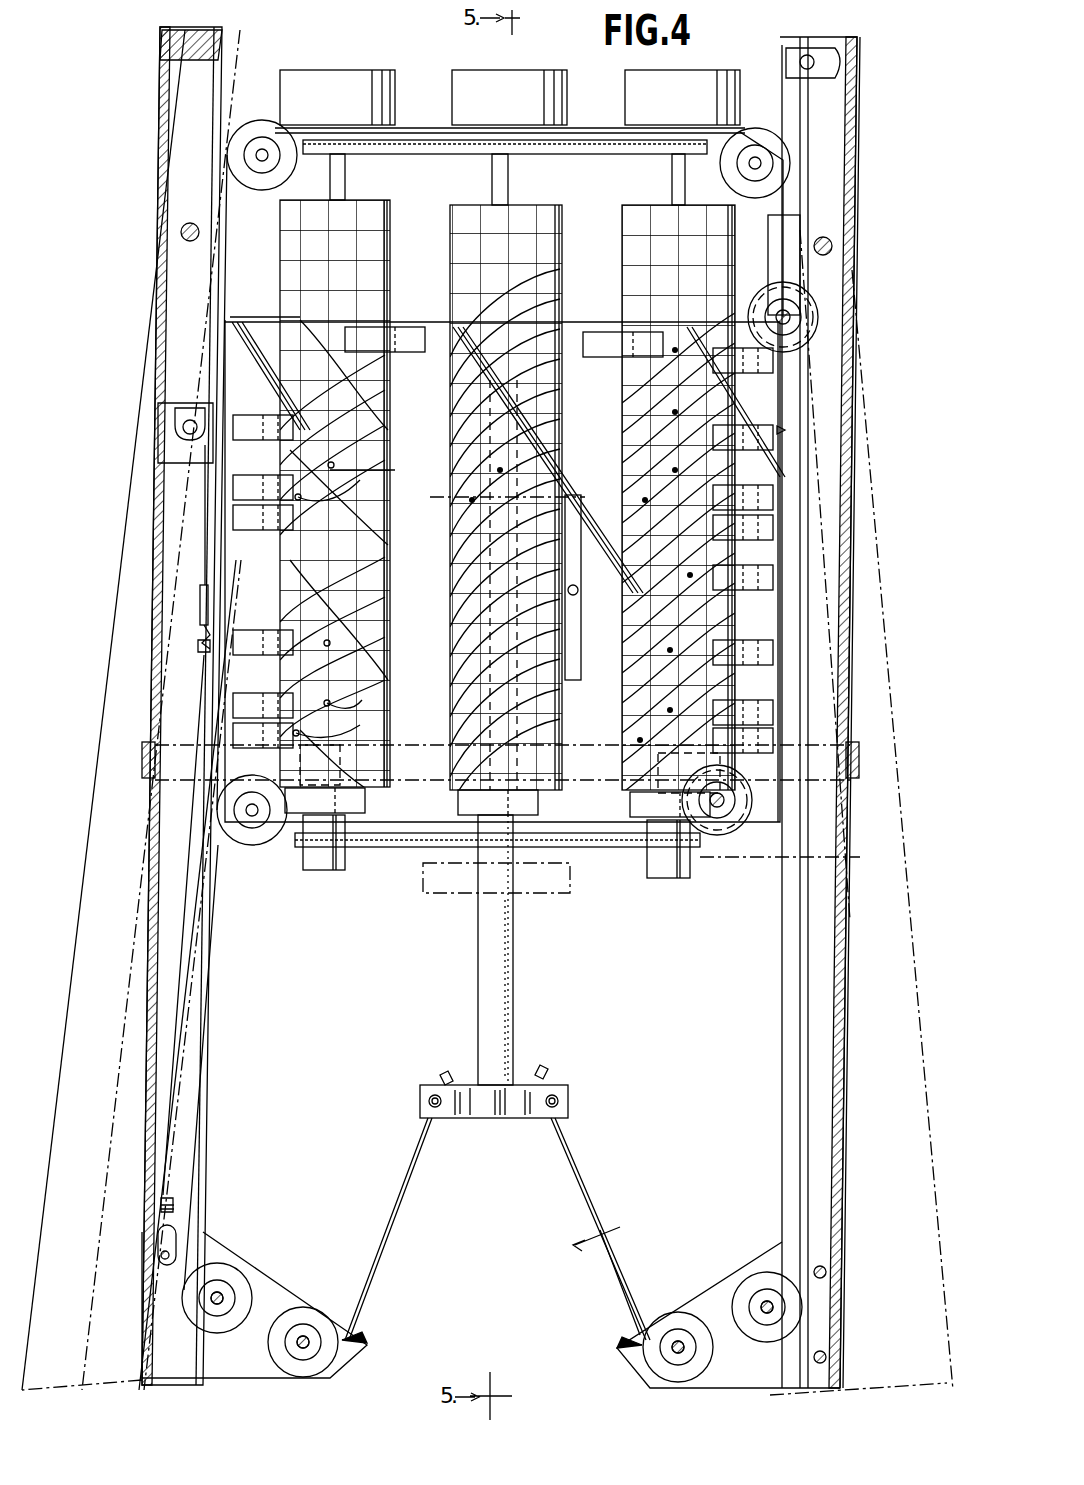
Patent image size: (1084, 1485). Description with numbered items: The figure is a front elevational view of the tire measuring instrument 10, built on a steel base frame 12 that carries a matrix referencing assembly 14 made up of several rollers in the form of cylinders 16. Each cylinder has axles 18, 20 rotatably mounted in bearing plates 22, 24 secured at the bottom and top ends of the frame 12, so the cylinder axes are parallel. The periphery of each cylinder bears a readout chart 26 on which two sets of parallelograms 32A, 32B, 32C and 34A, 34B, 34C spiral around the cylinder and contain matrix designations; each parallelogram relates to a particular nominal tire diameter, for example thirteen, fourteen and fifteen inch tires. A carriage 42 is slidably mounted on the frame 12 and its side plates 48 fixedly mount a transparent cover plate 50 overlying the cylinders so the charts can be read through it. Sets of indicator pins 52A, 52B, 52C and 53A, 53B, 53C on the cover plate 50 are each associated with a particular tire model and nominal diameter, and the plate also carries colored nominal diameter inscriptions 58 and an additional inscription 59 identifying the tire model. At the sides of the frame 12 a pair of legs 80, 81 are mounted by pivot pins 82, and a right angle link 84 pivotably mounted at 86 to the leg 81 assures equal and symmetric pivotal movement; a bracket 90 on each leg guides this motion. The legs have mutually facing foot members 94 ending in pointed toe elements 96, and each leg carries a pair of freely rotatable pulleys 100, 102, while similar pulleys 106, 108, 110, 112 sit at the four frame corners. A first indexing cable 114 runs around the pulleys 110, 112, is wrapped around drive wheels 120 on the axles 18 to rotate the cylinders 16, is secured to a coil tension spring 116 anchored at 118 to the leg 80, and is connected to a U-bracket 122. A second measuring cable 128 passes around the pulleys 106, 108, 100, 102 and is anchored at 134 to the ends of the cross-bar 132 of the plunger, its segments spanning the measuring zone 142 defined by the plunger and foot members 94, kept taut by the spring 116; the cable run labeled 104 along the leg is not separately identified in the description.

The tire measuring instrument 10 is at (139, 57).
The base frame 12 is at (600, 853).
The matrix referencing assembly 14 is at (749, 211).
The cylinders 16 is at (450, 222).
The axles 18 is at (330, 174).
The axles 20 is at (325, 872).
The bearing plate 22 is at (385, 848).
The bearing plate 24 is at (618, 155).
The readout chart 26 is at (348, 205).
The parallelogram 32A is at (368, 686).
The parallelogram 32B is at (365, 605).
The parallelogram 32C is at (372, 562).
The parallelogram 34A is at (358, 462).
The parallelogram 34B is at (365, 400).
The parallelogram 34C is at (368, 370).
The carriage 42 is at (787, 430).
The side plates 48 is at (578, 497).
The cover plate 50 is at (602, 771).
The indicator pin 52A is at (332, 735).
The indicator pin 52B is at (345, 715).
The indicator pin 52C is at (330, 643).
The indicator pin 53A is at (330, 502).
The indicator pin 53B is at (330, 450).
The indicator pin 53C is at (330, 360).
The nominal tire diameter inscription 58 is at (262, 490).
The additional inscription 59 is at (400, 327).
The leg 80 is at (160, 322).
The leg 81 is at (915, 990).
The pivot pins 82 is at (182, 228).
The right angle link 84 is at (175, 418).
The pivot mounting 86 is at (184, 432).
The bracket 90 is at (142, 770).
The foot members 94 is at (275, 1290).
The pointed toe elements 96 is at (365, 1343).
The pulley 100 is at (228, 1268).
The pulley 102 is at (305, 1312).
The cable 104 is at (222, 905).
The pulley 106 is at (262, 846).
The pulley 108 is at (725, 832).
The pulley 110 is at (755, 128).
The pulley 112 is at (282, 120).
The indexing cable 114 is at (452, 128).
The coil tension spring 116 is at (198, 645).
The spring anchor 118 is at (175, 1235).
The drive wheels 120 is at (674, 107).
The U-bracket 122 is at (795, 273).
The measuring cable 128 is at (395, 1200).
The cross-bar 132 is at (430, 1100).
The cable anchor 134 is at (560, 1100).
The measuring zone 142 is at (614, 1225).